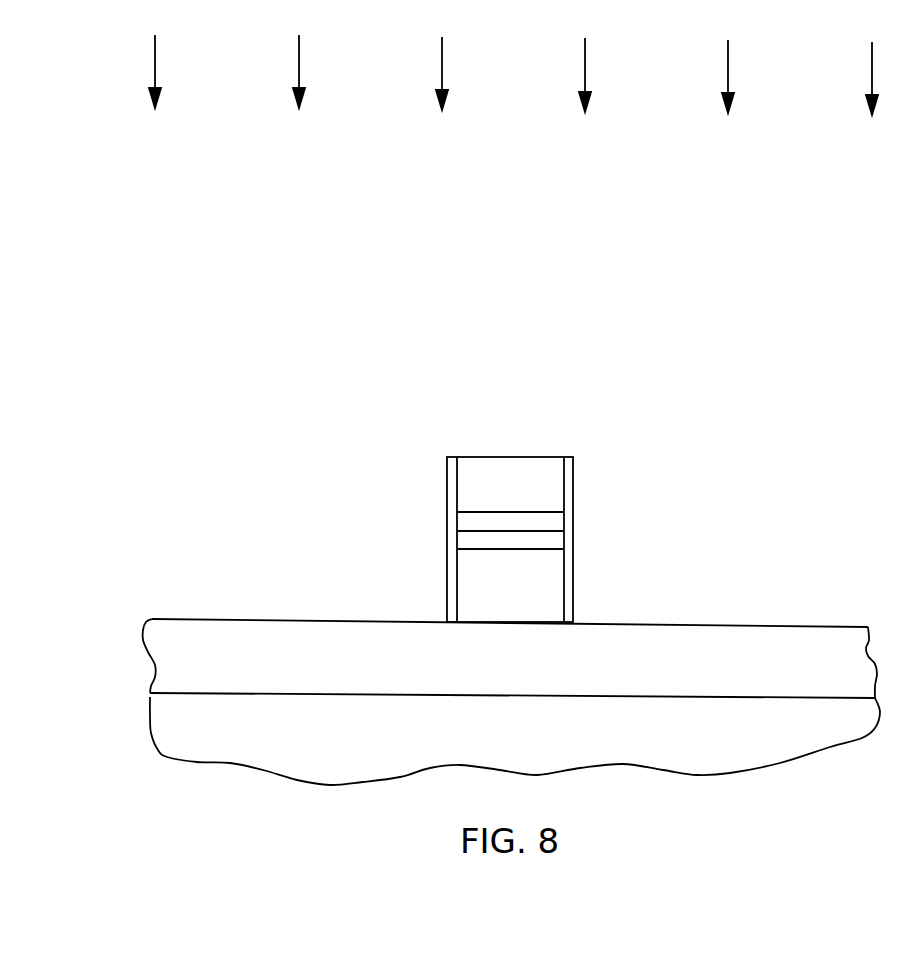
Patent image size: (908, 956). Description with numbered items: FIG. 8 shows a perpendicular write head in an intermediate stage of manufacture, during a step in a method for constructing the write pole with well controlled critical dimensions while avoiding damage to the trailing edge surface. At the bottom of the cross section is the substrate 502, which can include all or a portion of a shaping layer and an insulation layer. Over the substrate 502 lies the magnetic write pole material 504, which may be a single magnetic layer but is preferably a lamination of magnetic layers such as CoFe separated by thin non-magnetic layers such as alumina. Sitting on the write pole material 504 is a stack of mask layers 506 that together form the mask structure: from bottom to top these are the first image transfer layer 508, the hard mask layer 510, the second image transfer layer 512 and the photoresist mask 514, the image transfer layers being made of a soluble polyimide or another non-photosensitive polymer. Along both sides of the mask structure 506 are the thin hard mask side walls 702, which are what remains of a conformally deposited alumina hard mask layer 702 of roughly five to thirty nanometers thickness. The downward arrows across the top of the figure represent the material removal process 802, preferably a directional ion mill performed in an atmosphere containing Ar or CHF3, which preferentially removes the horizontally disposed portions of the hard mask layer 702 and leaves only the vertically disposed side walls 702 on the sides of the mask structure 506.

The material removal process 802 is at (300, 63).
The mask layers 506 is at (135, 455).
The hard mask layer 702 is at (447, 590).
The photoresist mask 514 is at (535, 481).
The second image transfer layer 512 is at (555, 522).
The hard mask layer 510 is at (553, 540).
The first image transfer layer 508 is at (562, 586).
The magnetic write pole material 504 is at (557, 660).
The substrate 502 is at (555, 733).